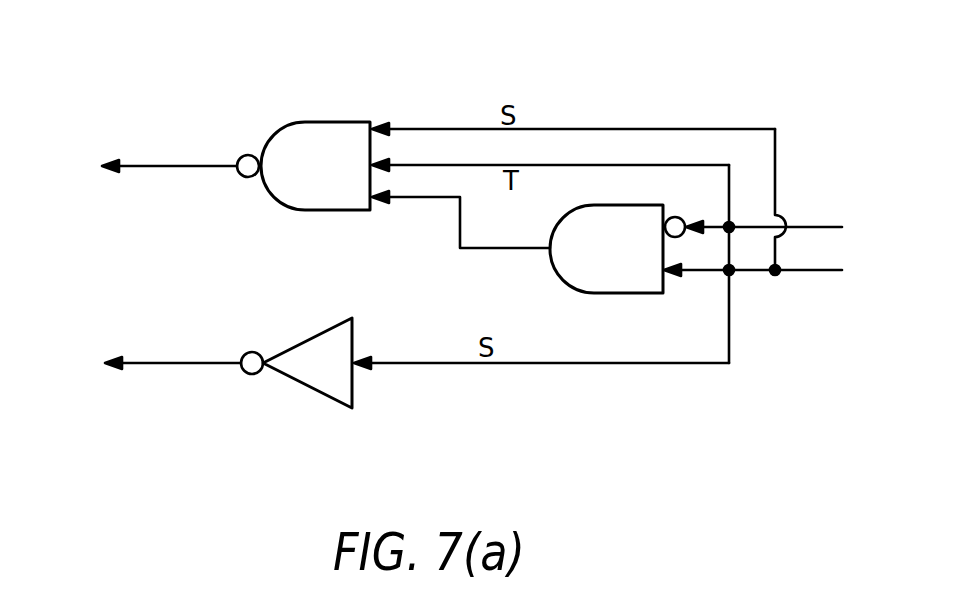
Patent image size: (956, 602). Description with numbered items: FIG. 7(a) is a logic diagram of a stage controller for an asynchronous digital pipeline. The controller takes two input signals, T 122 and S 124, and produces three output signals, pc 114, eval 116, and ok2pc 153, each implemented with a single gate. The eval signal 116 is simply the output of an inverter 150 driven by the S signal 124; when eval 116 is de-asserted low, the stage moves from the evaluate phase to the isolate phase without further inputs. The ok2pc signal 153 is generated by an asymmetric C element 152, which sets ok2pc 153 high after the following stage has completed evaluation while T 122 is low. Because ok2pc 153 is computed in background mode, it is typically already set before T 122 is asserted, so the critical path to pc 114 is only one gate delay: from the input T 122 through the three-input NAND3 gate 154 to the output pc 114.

The pc signal 114 is at (188, 164).
The eval signal 116 is at (190, 361).
The T signal 122 is at (807, 226).
The S signal 124 is at (818, 272).
The inverter 150 is at (300, 386).
The asymmetric C element 152 is at (622, 294).
The ok2pc signal 153 is at (456, 233).
The NAND3 gate 154 is at (322, 121).